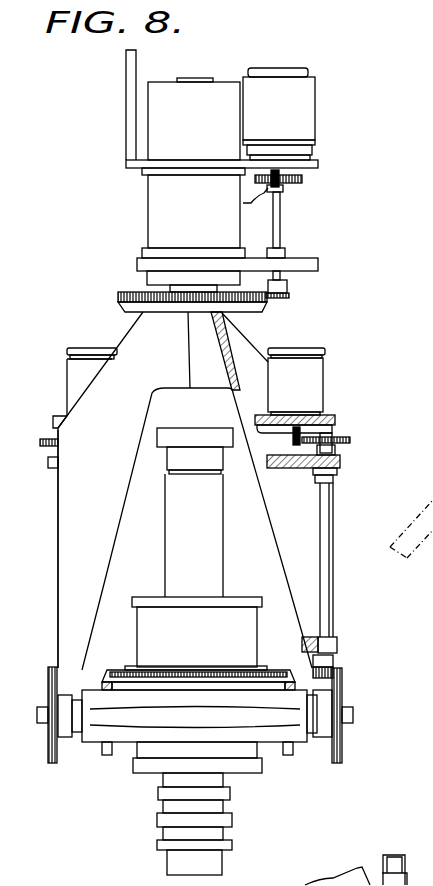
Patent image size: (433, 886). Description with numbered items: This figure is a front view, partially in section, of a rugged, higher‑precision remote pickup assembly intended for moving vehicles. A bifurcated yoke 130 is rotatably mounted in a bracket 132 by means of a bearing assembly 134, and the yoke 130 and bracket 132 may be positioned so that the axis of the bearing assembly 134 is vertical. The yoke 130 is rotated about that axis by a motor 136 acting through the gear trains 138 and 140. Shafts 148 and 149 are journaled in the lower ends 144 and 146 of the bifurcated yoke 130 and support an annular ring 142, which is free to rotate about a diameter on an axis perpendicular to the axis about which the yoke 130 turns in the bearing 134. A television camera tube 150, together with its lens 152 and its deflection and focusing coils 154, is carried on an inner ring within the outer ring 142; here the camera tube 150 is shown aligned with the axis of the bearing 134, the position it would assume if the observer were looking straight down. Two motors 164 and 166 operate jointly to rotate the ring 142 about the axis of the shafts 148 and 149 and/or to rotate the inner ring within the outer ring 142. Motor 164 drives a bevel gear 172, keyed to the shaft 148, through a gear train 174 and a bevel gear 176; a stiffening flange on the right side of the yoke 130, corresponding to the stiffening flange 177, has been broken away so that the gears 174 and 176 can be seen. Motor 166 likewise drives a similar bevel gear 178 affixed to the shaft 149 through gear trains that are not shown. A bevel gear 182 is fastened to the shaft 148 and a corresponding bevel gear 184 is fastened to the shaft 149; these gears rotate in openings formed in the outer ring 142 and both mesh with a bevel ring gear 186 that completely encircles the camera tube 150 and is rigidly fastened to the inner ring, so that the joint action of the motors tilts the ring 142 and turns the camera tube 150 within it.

The bifurcated yoke 130 is at (248, 341).
The bracket 132 is at (127, 146).
The bearing assembly 134 is at (165, 220).
The motor 136 is at (302, 123).
The gear train 138 is at (287, 184).
The gear train 140 is at (275, 302).
The annular ring 142 is at (273, 732).
The lower end of yoke 144 is at (325, 717).
The lower end of yoke 146 is at (67, 730).
The shaft 148 is at (355, 715).
The shaft 149 is at (37, 717).
The television camera tube 150 is at (218, 560).
The lens 152 is at (227, 820).
The deflection and focusing coils 154 is at (148, 640).
The motor 164 is at (317, 383).
The motor 166 is at (70, 365).
The bevel gear 172 is at (340, 743).
The gear train 174 is at (345, 445).
The bevel gear 176 is at (333, 667).
The stiffening flange 177 is at (68, 545).
The bevel gear 178 is at (43, 753).
The bevel gear 182 is at (285, 748).
The bevel gear 184 is at (105, 755).
The bevel ring gear 186 is at (273, 668).